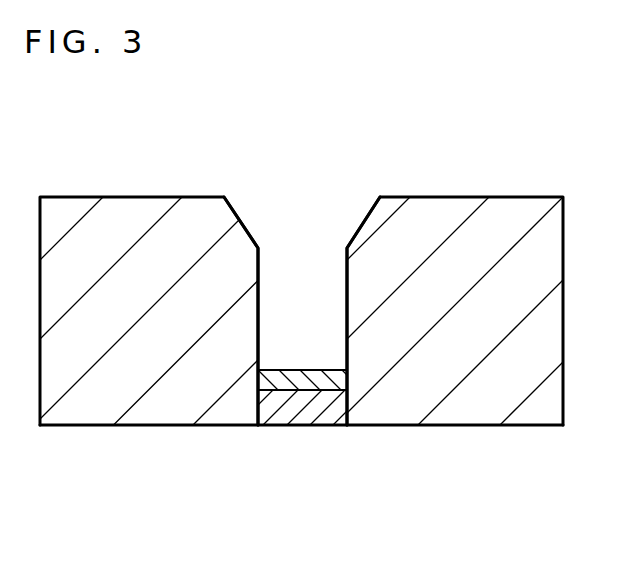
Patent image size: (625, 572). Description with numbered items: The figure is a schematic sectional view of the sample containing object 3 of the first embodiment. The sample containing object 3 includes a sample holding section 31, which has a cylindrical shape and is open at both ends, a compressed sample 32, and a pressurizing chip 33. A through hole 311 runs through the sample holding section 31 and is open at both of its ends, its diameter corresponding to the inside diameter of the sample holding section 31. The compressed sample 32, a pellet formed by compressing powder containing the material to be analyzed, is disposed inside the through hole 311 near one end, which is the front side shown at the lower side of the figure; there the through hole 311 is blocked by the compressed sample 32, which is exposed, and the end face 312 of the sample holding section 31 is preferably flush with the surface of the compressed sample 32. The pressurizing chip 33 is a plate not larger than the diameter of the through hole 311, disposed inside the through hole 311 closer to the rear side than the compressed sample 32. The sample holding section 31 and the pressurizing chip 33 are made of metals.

The sample containing object 3 is at (528, 167).
The sample holding section 31 is at (463, 410).
The through hole 311 is at (345, 280).
The end face 312 is at (135, 427).
The compressed sample 32 is at (283, 412).
The pressurizing chip 33 is at (327, 382).